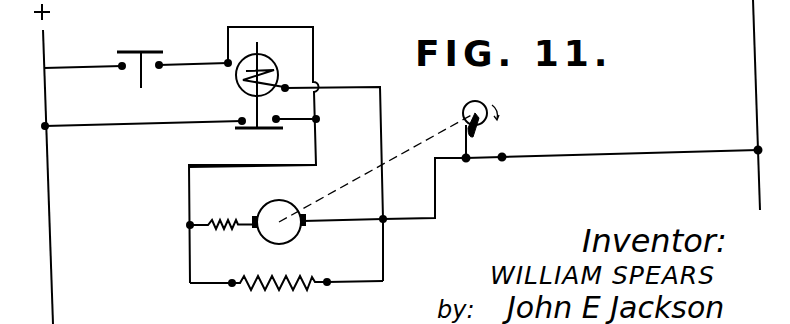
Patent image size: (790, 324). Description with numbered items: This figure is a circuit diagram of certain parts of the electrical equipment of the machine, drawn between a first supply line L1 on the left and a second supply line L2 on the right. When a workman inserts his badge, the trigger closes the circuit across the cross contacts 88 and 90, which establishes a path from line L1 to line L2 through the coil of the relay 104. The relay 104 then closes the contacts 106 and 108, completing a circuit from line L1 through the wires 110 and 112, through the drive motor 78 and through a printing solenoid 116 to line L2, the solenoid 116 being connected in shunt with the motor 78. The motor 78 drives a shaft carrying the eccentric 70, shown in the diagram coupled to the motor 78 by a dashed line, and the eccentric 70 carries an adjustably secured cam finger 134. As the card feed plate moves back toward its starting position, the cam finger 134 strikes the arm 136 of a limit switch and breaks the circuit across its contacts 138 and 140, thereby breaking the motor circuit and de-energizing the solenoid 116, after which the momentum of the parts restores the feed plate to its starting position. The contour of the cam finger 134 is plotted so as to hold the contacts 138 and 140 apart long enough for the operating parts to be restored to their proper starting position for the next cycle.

The eccentric 70 is at (465, 108).
The electric motor 78 is at (263, 212).
The cross contact 88 is at (121, 70).
The cross contact 90 is at (161, 68).
The relay 104 is at (272, 67).
The contact 106 is at (241, 119).
The contact 108 is at (278, 117).
The wire 110 is at (238, 165).
The wire 112 is at (653, 155).
The printing solenoid 116 is at (283, 278).
The cam finger 134 is at (486, 130).
The arm of limit switch 136 is at (463, 142).
The limit switch contact 138 is at (505, 152).
The limit switch contact 140 is at (504, 160).
The line L1 is at (50, 192).
The line L2 is at (757, 113).